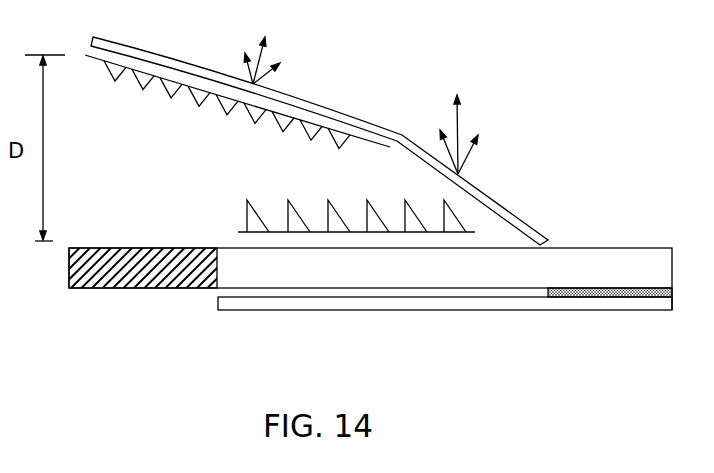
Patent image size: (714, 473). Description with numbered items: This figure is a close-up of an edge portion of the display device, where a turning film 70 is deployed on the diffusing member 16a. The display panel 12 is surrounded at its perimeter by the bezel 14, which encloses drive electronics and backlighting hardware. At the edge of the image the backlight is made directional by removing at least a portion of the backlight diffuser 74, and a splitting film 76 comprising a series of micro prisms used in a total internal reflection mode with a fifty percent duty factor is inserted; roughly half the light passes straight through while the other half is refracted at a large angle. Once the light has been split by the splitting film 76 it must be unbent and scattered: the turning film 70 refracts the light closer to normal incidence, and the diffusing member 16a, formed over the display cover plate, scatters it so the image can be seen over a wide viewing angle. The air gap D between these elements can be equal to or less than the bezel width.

The display panel 12 is at (585, 248).
The bezel 14 is at (122, 288).
The diffusing member 16a is at (337, 112).
The turning film 70 is at (95, 71).
The backlight diffuser 74 is at (673, 290).
The splitting film 76 is at (245, 219).